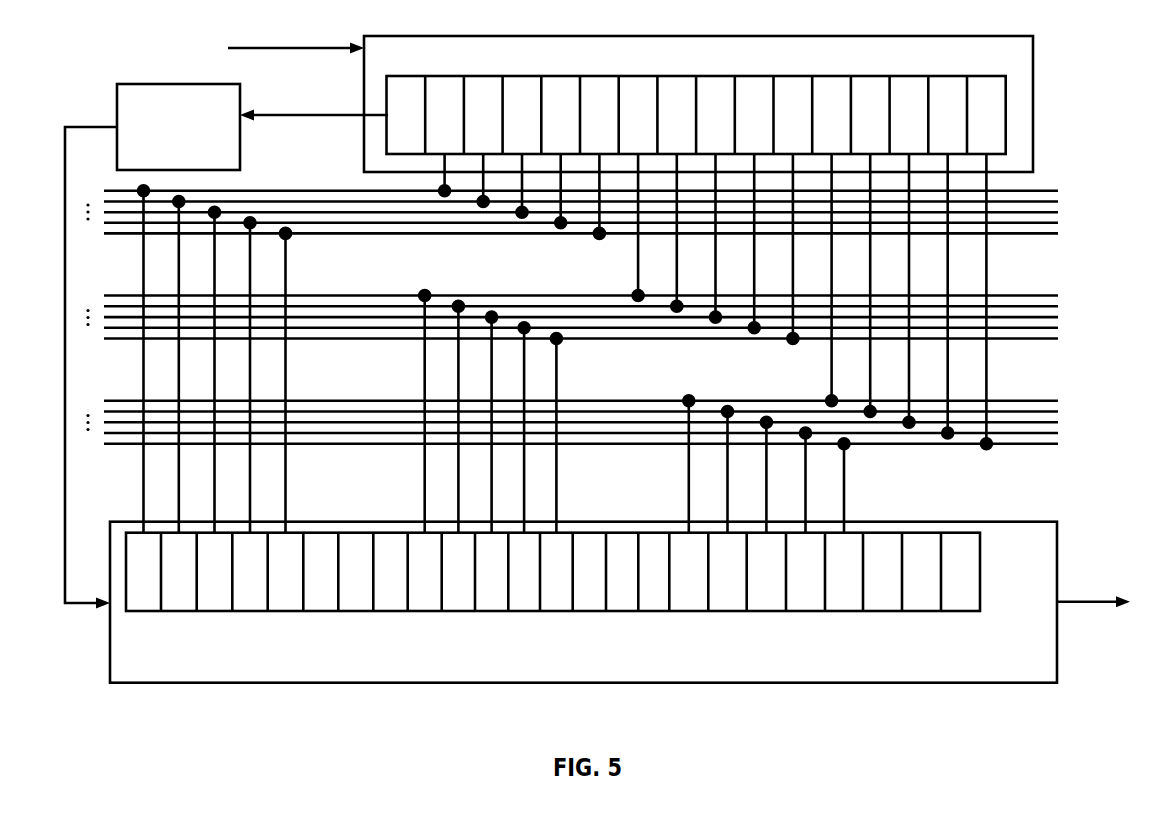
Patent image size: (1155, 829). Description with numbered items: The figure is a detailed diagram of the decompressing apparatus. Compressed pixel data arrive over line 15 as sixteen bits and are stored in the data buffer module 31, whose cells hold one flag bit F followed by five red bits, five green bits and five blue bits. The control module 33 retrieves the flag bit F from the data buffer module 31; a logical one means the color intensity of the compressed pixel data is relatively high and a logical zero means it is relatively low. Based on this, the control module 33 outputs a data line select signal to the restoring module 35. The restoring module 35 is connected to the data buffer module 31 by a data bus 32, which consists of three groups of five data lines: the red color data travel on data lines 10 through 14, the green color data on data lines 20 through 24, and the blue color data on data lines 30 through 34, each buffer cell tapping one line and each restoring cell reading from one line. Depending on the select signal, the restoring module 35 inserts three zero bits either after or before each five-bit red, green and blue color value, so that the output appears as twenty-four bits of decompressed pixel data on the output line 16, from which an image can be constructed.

The data line 10 is at (567, 233).
The data line 14 is at (567, 191).
The line 15 is at (336, 47).
The 24-bit output data 16 is at (1080, 601).
The data line 20 is at (567, 339).
The data line 24 is at (567, 296).
The data line 30 is at (567, 444).
The data buffer module 31 is at (835, 64).
The data bus 32 is at (1062, 308).
The control module 33 is at (166, 164).
The data line 34 is at (567, 401).
The restoring module 35 is at (572, 676).